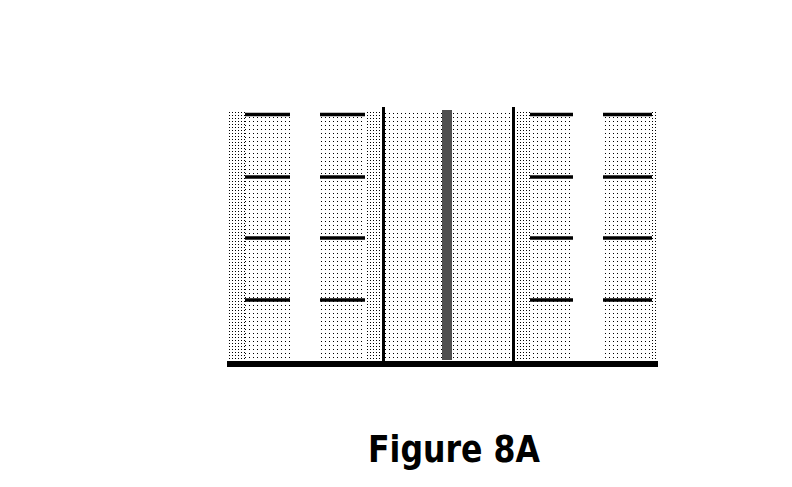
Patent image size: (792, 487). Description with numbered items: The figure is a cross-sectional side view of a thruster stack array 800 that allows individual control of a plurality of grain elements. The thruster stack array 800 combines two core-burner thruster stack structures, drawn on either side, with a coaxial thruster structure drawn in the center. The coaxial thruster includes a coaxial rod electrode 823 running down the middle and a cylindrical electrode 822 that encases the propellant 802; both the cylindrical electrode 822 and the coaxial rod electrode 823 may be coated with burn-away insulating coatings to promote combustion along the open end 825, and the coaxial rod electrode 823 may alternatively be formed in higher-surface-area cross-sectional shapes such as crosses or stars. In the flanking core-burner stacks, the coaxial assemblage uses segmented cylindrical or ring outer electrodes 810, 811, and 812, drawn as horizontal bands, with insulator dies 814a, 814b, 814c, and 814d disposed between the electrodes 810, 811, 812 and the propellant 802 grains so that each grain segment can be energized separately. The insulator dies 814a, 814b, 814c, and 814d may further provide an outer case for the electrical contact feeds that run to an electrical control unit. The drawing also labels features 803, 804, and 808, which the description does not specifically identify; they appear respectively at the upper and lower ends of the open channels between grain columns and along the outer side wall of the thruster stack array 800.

The thruster stack array 800 is at (180, 67).
The propellant 802 is at (268, 338).
The trench / opening 803 is at (315, 101).
The channel opening 804 is at (303, 348).
The sidewall liner layer 808 is at (240, 237).
The electrode 810 is at (643, 237).
The electrode 811 is at (645, 178).
The electrode 812 is at (648, 358).
The insulator die 814a is at (245, 140).
The insulator die 814b is at (245, 202).
The insulator die 814c is at (245, 267).
The insulator die 814d is at (245, 332).
The cylindrical electrode 822 is at (385, 117).
The coaxial rod electrode 823 is at (453, 118).
The open end 825 is at (497, 100).